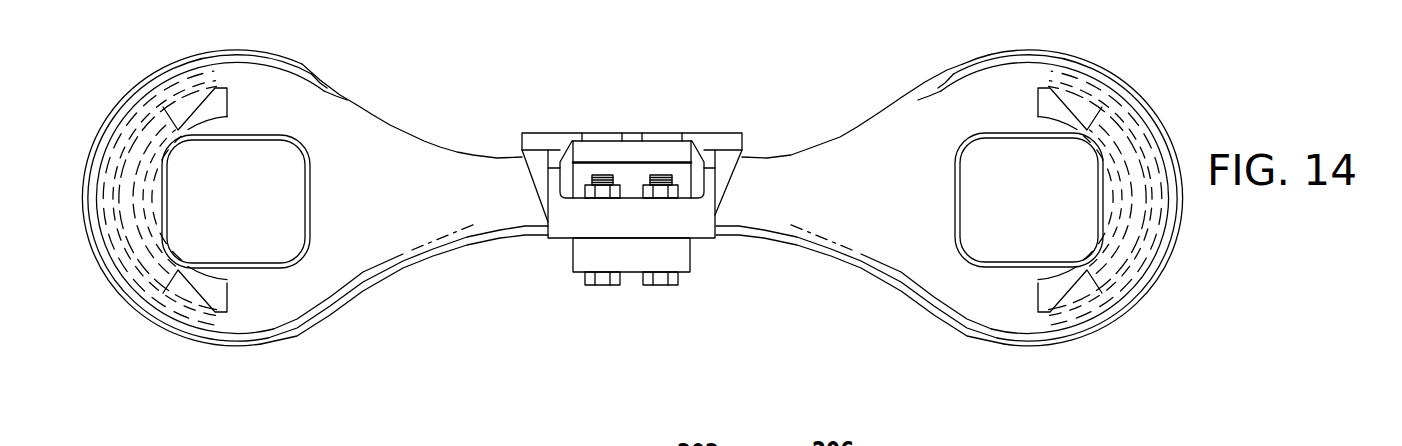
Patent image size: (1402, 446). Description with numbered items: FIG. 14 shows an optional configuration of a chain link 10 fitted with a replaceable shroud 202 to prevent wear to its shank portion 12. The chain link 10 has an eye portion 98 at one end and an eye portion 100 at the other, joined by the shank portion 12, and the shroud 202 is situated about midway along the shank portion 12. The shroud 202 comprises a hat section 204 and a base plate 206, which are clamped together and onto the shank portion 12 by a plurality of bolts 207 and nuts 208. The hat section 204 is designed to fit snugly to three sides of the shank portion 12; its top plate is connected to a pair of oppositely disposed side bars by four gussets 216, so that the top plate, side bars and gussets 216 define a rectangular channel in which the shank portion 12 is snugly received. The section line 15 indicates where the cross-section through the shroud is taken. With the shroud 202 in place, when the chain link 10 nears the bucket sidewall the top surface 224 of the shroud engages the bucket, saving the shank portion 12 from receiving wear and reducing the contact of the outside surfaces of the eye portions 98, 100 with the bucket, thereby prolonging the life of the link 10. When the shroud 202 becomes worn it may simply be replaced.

The chain link 10 is at (486, 268).
The shank portion 12 is at (728, 202).
The section line 15- 15 is at (662, 315).
The eye portion 98 is at (247, 344).
The eye portion 100 is at (1020, 344).
The replaceable shroud 202 is at (502, 116).
The hat section 204 is at (700, 138).
The base plate 206 is at (682, 252).
The bolts 207 is at (678, 280).
The nuts 208 is at (588, 192).
The gussets 216 is at (553, 155).
The top surface 224 is at (567, 135).